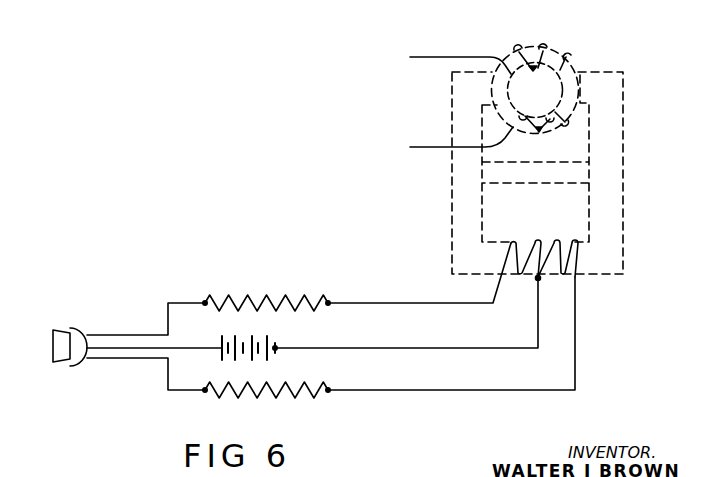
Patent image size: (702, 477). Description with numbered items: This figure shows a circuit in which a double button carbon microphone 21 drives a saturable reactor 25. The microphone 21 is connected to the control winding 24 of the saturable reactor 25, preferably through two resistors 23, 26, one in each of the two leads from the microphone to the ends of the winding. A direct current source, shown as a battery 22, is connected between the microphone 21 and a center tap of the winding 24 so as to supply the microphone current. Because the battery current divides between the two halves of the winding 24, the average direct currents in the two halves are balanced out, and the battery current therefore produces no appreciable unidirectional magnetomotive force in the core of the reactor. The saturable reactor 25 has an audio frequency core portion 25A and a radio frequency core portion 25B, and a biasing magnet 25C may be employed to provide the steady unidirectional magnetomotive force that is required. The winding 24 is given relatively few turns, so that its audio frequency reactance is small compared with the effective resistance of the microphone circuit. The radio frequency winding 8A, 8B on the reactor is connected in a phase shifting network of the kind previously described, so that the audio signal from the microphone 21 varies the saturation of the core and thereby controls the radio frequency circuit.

The radio frequency winding 8A is at (521, 48).
The radio frequency winding 8B is at (530, 132).
The double button carbon microphone 21 is at (83, 364).
The battery 22 is at (262, 344).
The resistor 23 is at (283, 297).
The control winding 24 is at (531, 239).
The saturable reactor 25 is at (522, 98).
The audio frequency core portion 25A is at (623, 157).
The RF core portion 25B is at (557, 53).
The biasing magnet 25C is at (505, 182).
The resistor 26 is at (301, 396).